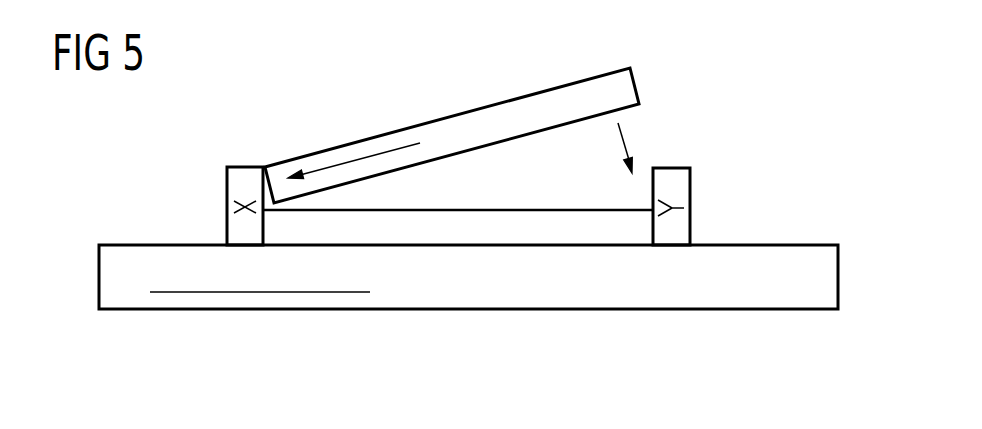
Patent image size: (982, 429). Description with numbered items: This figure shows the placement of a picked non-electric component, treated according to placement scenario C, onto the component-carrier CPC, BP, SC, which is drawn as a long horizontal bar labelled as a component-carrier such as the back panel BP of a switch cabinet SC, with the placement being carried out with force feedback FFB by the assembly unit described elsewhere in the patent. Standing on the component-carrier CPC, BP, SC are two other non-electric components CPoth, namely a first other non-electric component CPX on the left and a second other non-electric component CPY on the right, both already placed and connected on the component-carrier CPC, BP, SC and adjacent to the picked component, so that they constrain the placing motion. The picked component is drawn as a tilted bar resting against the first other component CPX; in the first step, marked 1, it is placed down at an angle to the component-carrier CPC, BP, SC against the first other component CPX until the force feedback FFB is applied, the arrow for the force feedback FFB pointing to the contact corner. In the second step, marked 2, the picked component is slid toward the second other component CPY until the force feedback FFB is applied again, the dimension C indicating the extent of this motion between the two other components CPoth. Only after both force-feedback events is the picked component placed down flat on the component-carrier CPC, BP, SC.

The component-carrier CPC is at (468, 317).
The back panel BP is at (468, 317).
The switch cabinet SC is at (470, 310).
The other non-electric components CPoth is at (461, 202).
The first other non-electric component CPX is at (227, 180).
The second other non-electric component CPY is at (690, 185).
The force feedback FFB is at (267, 157).
The picked non-electric component (scenario C) C is at (458, 184).
The first placing motion 1 is at (354, 148).
The second placing motion 2 is at (606, 148).